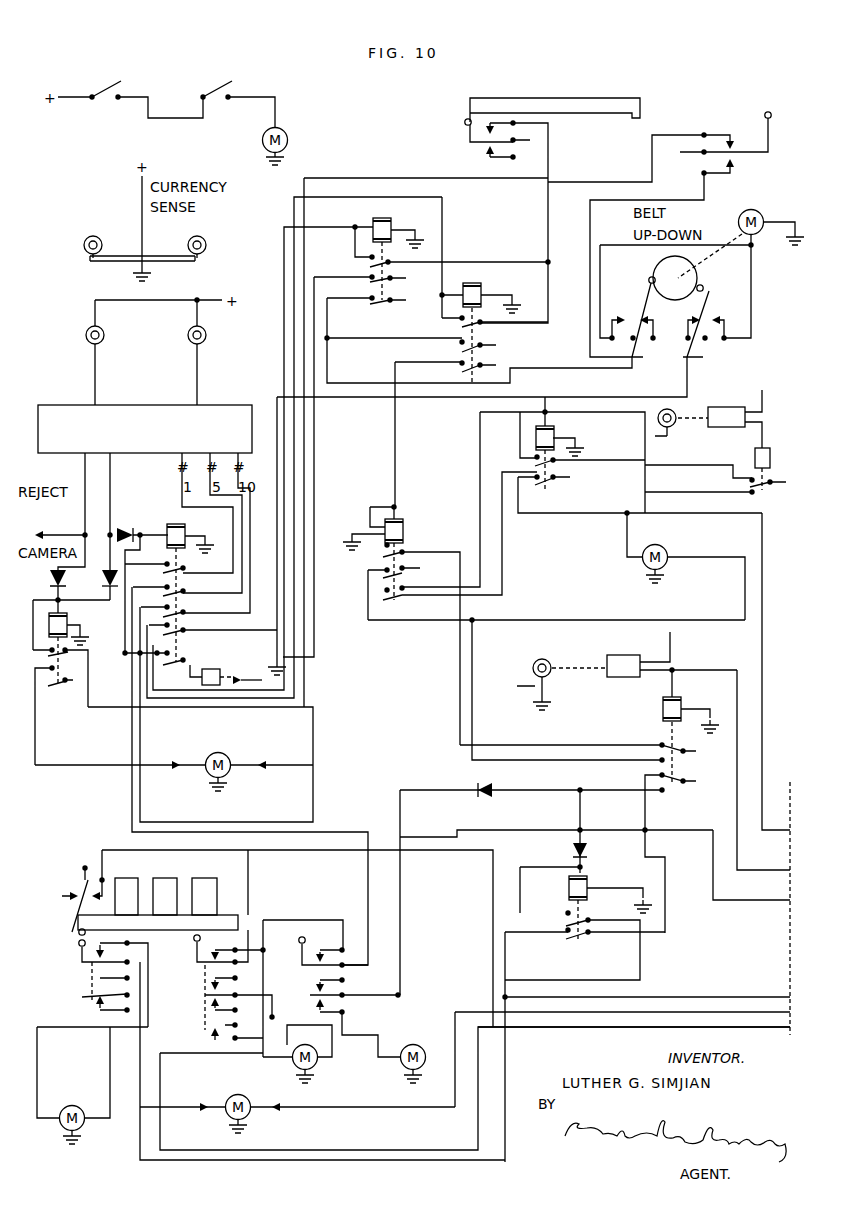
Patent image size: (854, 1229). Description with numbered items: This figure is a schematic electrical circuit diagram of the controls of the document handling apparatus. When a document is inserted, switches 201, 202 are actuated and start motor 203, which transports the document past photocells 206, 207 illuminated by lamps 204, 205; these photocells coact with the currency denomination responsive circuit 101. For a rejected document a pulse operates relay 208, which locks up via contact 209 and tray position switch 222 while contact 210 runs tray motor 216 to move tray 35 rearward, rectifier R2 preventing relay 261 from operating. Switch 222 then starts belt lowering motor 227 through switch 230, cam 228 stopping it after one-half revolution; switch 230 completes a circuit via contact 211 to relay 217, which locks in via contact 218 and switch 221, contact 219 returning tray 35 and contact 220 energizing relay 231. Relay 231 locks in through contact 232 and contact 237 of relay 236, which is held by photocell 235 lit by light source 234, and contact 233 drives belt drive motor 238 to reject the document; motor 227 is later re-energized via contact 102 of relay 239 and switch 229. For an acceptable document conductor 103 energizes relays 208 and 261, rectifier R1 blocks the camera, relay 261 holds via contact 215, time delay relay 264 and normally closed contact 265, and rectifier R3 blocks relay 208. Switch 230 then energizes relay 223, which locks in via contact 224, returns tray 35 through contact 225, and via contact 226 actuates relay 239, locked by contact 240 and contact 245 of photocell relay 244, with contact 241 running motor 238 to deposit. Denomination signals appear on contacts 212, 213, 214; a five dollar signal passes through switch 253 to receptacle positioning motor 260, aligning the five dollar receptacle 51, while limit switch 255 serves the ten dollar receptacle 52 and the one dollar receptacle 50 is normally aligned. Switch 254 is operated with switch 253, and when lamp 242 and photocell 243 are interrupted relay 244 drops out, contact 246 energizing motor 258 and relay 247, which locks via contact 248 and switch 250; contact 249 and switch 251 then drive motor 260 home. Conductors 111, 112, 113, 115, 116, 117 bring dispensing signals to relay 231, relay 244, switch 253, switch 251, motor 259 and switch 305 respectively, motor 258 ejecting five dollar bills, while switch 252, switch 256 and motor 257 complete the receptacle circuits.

The switch 201 is at (100, 103).
The switch 202 is at (217, 100).
The motor 203 is at (285, 133).
The lamp 204 is at (87, 262).
The lamp 205 is at (196, 262).
The photocell 206 is at (86, 340).
The photocell 207 is at (207, 340).
The currency denomination responsive circuit 101 is at (245, 444).
The conductor 103 is at (112, 470).
The rectifier R1 is at (46, 591).
The rectifier R2 is at (98, 581).
The rectifier R3 is at (140, 526).
The relay 208 is at (69, 622).
The contact 209 is at (68, 651).
The contact 210 is at (52, 682).
The relay 261 is at (185, 529).
The contact 212 is at (184, 569).
The contact 213 is at (184, 591).
The contact 214 is at (184, 611).
The contact 211 is at (186, 628).
The contact 215 is at (176, 658).
The time delay relay 264 is at (208, 688).
The normally closed contact 265 is at (236, 676).
The tray motor 216 is at (229, 776).
The one dollar receptacle 50 is at (116, 878).
The five dollar receptacle 51 is at (154, 878).
The ten dollar receptacle 52 is at (194, 878).
The limit switch 250 is at (68, 893).
The switch 251 is at (90, 966).
The switch contact 252 is at (88, 999).
The receptacle positioning motor 260 is at (80, 1128).
The limit switch 253 is at (202, 965).
The switch 254 is at (205, 994).
The switch 305 is at (215, 1038).
The limit switch 255 is at (308, 967).
The switch contact 256 is at (310, 995).
The receptacle motor 258 is at (311, 1067).
The receptacle 10 motor 257 is at (401, 1068).
The motor 259 is at (250, 1122).
The tray 35 is at (597, 104).
The switch 221 is at (492, 145).
The tray position switch 222 is at (742, 146).
The belt lowering motor 227 is at (752, 211).
The cam 228 is at (652, 270).
The switch 229 is at (635, 311).
The switch 230 is at (706, 313).
The relay 217 is at (388, 222).
The contact 218 is at (368, 266).
The contact 219 is at (368, 281).
The contact 220 is at (368, 304).
The relay 223 is at (484, 290).
The contact 224 is at (458, 326).
The contact 225 is at (458, 348).
The contact 226 is at (458, 370).
The relay 231 is at (556, 434).
The contact 232 is at (557, 464).
The contact 233 is at (557, 483).
The light source 234 is at (672, 433).
The photocell 235 is at (733, 407).
The relay 236 is at (771, 460).
The contact 237 is at (762, 487).
The belt drive motor 238 is at (668, 550).
The relay 239 is at (402, 522).
The contact 240 is at (404, 551).
The contact 241 is at (404, 578).
The contact 102 is at (400, 598).
The lamp 242 is at (538, 661).
The photocell 243 is at (608, 655).
The photocell relay 244 is at (684, 696).
The contact 245 is at (660, 744).
The contact 246 is at (668, 790).
The relay 247 is at (590, 878).
The contact 248 is at (592, 918).
The contact 249 is at (588, 940).
The conductor 111 is at (781, 834).
The conductor 112 is at (772, 873).
The conductor 113 is at (769, 906).
The conductor 115 is at (758, 997).
The conductor 116 is at (602, 1014).
The conductor 117 is at (645, 1029).